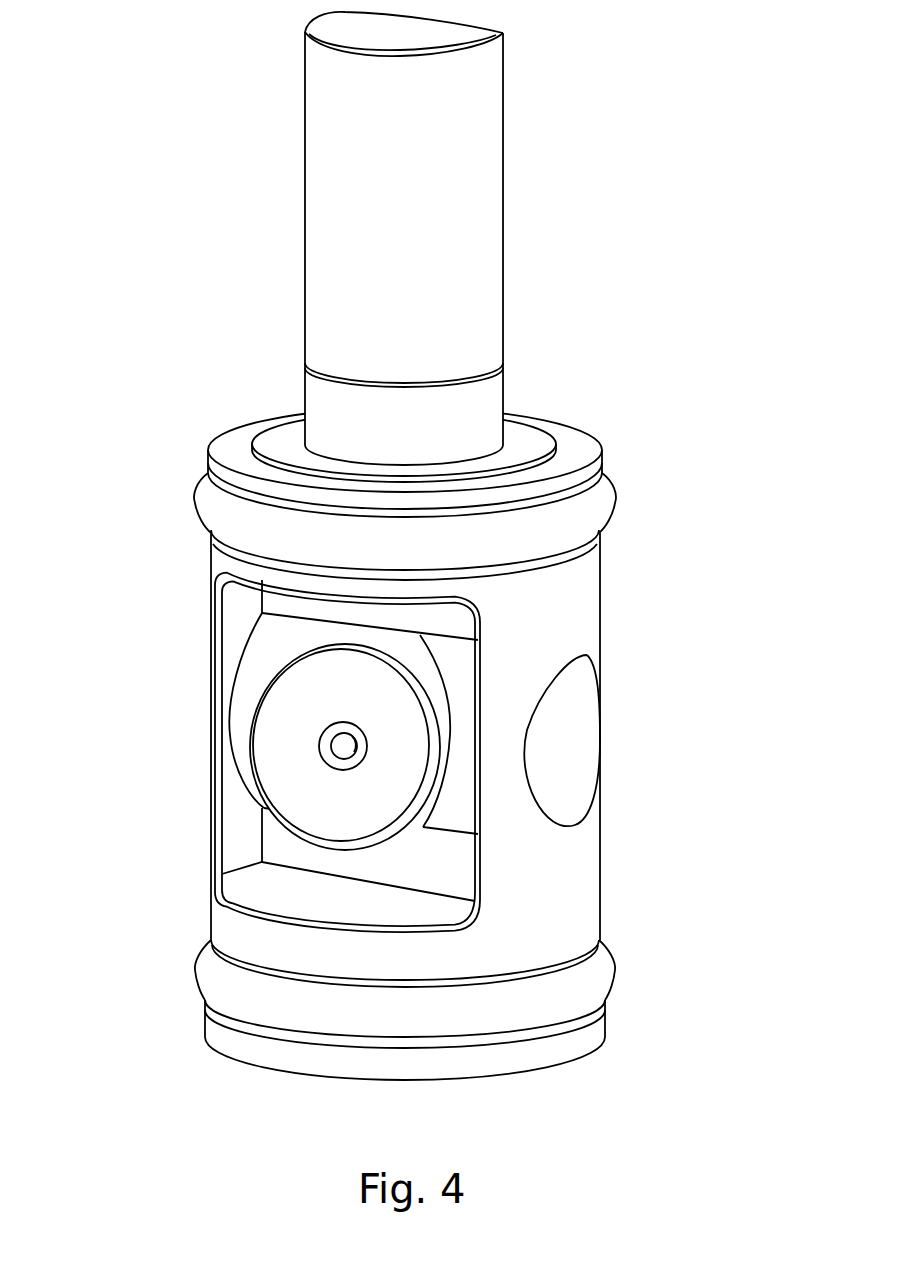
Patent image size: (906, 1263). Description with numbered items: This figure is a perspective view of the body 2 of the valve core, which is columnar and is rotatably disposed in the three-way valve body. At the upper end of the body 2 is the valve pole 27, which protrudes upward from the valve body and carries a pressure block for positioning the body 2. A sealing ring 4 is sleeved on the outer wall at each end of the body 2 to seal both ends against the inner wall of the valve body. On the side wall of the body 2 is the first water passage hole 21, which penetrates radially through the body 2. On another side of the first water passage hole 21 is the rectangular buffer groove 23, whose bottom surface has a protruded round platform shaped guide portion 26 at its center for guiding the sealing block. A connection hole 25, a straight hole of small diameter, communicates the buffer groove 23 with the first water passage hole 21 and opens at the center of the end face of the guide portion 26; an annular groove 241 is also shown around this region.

The body 2 is at (538, 875).
The sealing ring 4 is at (535, 527).
The first water passage hole 21 is at (563, 738).
The buffer groove 23 is at (291, 856).
The connection hole 25 is at (345, 745).
The guide portion 26 is at (278, 755).
The valve pole 27 is at (405, 238).
The annular groove 241 is at (452, 743).